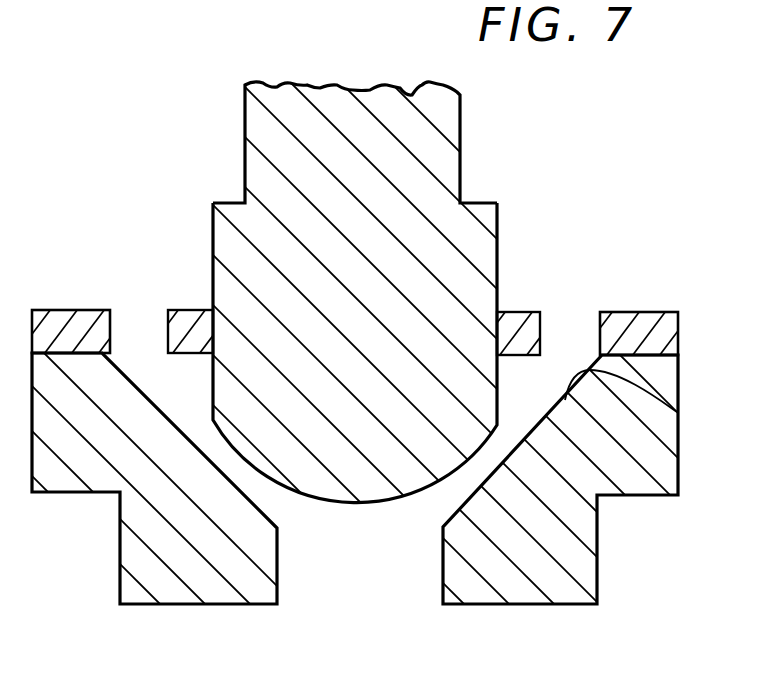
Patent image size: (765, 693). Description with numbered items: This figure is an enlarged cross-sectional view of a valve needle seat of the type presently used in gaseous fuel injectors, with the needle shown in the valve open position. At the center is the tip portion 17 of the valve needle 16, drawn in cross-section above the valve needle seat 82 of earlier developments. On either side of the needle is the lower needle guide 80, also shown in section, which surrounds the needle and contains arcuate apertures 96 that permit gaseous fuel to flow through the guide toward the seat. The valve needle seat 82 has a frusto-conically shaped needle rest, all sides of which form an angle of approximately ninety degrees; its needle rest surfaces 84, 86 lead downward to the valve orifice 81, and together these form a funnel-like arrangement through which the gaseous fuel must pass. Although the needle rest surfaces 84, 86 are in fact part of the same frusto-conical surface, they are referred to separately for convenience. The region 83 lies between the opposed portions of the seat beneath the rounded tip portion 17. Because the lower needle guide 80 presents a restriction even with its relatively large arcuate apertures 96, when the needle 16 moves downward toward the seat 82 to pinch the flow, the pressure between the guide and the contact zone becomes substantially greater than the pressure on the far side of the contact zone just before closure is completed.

The valve needle 16 is at (366, 346).
The tip portion 17 is at (448, 310).
The lower needle guide 80 is at (643, 325).
The valve orifice 81 is at (413, 593).
The valve needle seat 82 is at (590, 562).
The gap 83 is at (455, 510).
The needle rest surface 84 is at (697, 416).
The needle rest surface 86 is at (138, 387).
The arcuate apertures 96 is at (120, 310).